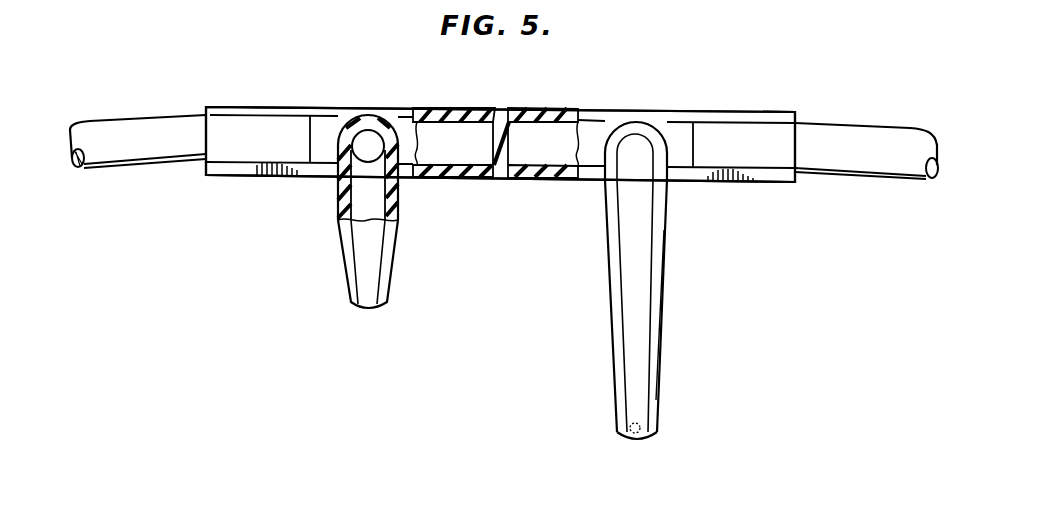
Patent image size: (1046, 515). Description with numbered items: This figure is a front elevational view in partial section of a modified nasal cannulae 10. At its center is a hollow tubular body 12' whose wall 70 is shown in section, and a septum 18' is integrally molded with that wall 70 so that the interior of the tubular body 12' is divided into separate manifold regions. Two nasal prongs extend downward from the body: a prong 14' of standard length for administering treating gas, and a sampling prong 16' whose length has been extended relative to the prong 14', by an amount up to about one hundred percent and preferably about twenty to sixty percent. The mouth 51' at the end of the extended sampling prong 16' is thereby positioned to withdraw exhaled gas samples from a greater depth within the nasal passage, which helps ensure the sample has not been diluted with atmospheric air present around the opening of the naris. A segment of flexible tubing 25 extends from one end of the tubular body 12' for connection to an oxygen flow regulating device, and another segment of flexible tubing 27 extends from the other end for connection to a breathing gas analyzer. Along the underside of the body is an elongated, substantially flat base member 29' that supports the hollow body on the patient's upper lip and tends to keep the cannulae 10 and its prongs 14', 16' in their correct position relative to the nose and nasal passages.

The cannulae 10 is at (650, 105).
The tubular body 12' is at (500, 117).
The prong 14' is at (408, 211).
The sampling prong 16' is at (684, 280).
The septum 18' is at (516, 174).
The flexible tubing 25 is at (165, 165).
The flexible tubing 27 is at (857, 170).
The base member 29' is at (760, 207).
The mouth 51' is at (691, 437).
The wall 70 is at (490, 107).